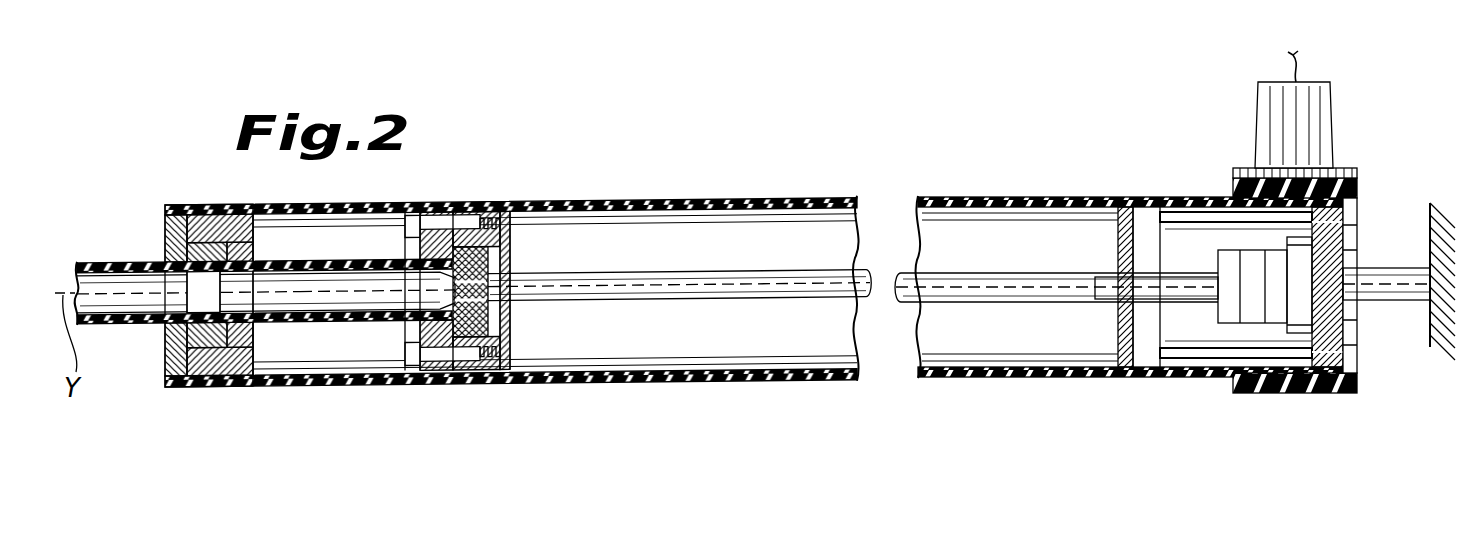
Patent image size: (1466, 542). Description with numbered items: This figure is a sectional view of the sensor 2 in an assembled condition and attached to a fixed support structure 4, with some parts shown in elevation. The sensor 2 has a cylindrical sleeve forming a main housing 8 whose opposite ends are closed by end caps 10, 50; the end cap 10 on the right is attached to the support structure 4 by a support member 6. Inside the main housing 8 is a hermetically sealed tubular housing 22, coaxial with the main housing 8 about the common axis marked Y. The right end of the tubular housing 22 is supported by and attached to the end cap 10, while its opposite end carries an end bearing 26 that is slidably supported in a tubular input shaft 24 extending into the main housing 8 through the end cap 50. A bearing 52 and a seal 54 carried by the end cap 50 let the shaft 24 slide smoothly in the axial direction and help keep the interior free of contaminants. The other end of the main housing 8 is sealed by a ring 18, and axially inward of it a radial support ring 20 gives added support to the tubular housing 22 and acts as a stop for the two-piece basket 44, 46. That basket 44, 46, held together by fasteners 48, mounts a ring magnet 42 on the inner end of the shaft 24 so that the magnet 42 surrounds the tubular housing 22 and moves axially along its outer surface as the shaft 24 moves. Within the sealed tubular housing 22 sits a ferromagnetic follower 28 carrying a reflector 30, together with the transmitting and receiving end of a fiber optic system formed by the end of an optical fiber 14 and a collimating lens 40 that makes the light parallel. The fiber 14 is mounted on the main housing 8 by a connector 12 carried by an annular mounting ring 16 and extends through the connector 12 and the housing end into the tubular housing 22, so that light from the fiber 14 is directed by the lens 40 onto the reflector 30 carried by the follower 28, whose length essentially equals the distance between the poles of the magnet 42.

The sensor 2 is at (723, 184).
The fixed support structure 4 is at (1414, 232).
The support member 6 is at (1389, 304).
The main housing 8 is at (1018, 197).
The end cap 10 is at (1357, 237).
The connector 12 is at (1338, 118).
The optical fiber 14 is at (1298, 62).
The annular mounting ring 16 is at (1306, 394).
The ring 18 is at (1200, 376).
The radial support ring 20 is at (1120, 344).
The hermetically sealed tubular housing 22 is at (997, 305).
The tubular input shaft 24 is at (103, 325).
The end bearing 26 is at (133, 283).
The ferromagnetic follower 28 is at (402, 284).
The reflector 30 is at (521, 299).
The collimating lens 40 is at (1100, 285).
The magnet 42 is at (483, 328).
The basket piece 44 is at (406, 340).
The basket piece 46 is at (513, 253).
The fasteners 48 is at (441, 205).
The end cap 50 is at (161, 380).
The bearing 52 is at (217, 207).
The seal 54 is at (168, 253).